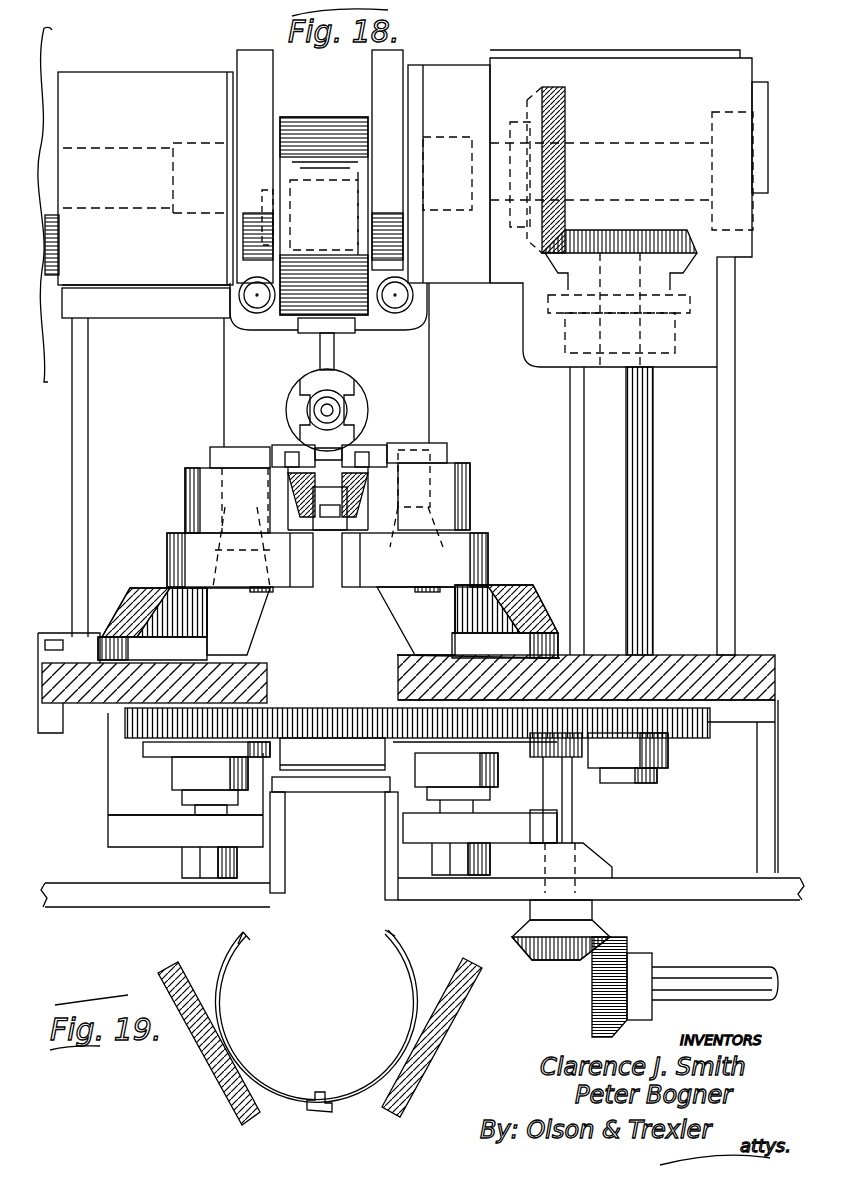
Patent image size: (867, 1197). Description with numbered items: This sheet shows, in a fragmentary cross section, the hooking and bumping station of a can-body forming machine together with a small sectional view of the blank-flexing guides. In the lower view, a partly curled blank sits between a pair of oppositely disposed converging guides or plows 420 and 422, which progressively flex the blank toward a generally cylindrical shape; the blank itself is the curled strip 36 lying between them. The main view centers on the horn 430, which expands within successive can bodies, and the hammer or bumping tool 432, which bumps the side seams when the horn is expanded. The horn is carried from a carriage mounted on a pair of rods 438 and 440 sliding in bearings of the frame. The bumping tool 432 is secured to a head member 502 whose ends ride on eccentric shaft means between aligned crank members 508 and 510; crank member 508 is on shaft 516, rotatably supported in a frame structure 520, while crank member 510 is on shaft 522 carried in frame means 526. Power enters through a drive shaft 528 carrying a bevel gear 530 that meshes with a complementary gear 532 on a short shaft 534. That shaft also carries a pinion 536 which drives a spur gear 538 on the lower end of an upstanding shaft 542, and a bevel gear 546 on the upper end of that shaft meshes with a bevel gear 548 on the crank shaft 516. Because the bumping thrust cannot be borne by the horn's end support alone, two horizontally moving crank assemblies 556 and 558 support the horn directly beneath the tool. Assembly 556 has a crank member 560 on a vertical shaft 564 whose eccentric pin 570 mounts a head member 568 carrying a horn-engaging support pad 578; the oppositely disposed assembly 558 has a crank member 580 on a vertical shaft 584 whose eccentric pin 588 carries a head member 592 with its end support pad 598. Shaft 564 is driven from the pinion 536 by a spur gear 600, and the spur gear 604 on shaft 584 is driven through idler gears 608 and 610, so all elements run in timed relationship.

In FIG. 19, the band 36 is at (412, 960).
In FIG. 19, the converging guide or plow 420 is at (437, 1047).
In FIG. 19, the converging guide or plow 422 is at (202, 1042).
In FIG. 18, the horn 430 is at (405, 374).
In FIG. 18, the bumping tool 432 is at (336, 345).
In FIG. 18, the rod 438 is at (400, 302).
In FIG. 18, the rod 440 is at (255, 300).
In FIG. 18, the head member 502 is at (325, 127).
In FIG. 18, the crank member 508 is at (400, 53).
In FIG. 18, the crank member 510 is at (248, 62).
In FIG. 18, the shaft 516 is at (497, 140).
In FIG. 18, the frame structure 520 is at (660, 57).
In FIG. 18, the shaft 522 is at (127, 147).
In FIG. 18, the frame means 526 is at (85, 70).
In FIG. 18, the drive shaft 528 is at (745, 972).
In FIG. 18, the bevel gear 530 is at (593, 1018).
In FIG. 18, the bevel gear 532 is at (597, 923).
In FIG. 18, the short shaft 534 is at (567, 830).
In FIG. 18, the pinion 536 is at (532, 745).
In FIG. 18, the spur gear 538 is at (693, 733).
In FIG. 18, the upstanding shaft 542 is at (717, 470).
In FIG. 18, the bevel gear 546 is at (700, 258).
In FIG. 18, the bevel gear 548 is at (562, 100).
In FIG. 18, the crank assembly 556 is at (511, 505).
In FIG. 18, the crank assembly 558 is at (162, 521).
In FIG. 18, the crank member 560 is at (547, 562).
In FIG. 18, the vertical shaft 564 is at (430, 673).
In FIG. 18, the head member 568 is at (470, 483).
In FIG. 18, the eccentric pin 570 is at (450, 447).
In FIG. 18, the support pad 578 is at (350, 447).
In FIG. 18, the crank member 580 is at (137, 607).
In FIG. 18, the vertical shaft 584 is at (197, 813).
In FIG. 18, the eccentric pin 588 is at (268, 560).
In FIG. 18, the head member 592 is at (183, 490).
In FIG. 18, the support pad 598 is at (275, 447).
In FIG. 18, the spur gear 600 is at (425, 722).
In FIG. 18, the spur gear 604 is at (147, 727).
In FIG. 18, the idler gear 608 is at (353, 708).
In FIG. 18, the idler gear 610 is at (300, 708).